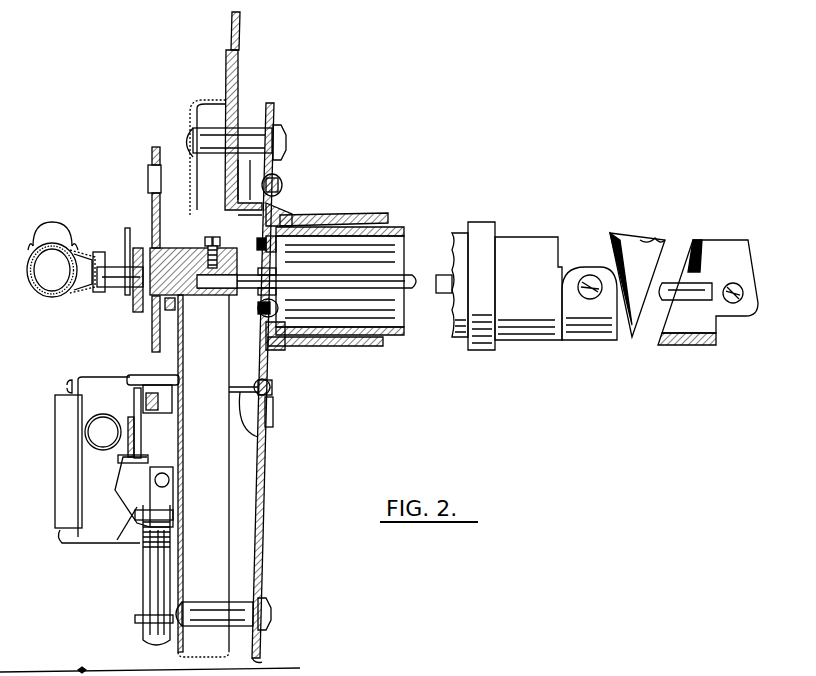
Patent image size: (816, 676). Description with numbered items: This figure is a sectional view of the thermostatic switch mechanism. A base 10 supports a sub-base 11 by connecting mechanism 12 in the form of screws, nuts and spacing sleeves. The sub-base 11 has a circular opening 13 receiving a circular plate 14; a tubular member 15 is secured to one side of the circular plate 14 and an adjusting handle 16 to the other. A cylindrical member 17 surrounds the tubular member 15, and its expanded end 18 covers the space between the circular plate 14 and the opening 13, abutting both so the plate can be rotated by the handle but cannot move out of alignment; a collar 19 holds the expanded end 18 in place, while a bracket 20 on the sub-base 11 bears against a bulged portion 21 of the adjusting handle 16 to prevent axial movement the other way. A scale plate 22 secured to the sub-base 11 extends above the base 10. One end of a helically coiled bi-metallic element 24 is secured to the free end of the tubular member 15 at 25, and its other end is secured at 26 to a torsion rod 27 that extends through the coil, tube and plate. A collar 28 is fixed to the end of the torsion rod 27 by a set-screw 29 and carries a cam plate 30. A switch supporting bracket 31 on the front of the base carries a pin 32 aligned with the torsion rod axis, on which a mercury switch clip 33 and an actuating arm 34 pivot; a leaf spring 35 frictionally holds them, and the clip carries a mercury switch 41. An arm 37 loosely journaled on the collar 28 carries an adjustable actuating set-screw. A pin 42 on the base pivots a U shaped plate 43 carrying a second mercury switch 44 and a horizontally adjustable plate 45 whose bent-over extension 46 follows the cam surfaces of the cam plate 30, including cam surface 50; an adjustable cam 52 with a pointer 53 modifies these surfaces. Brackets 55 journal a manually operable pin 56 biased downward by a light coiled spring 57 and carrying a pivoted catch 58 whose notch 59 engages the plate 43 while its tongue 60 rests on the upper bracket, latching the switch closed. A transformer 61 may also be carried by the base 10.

The base 10 is at (178, 655).
The sub-base 11 is at (262, 565).
The connecting mechanism 12 is at (250, 130).
The circular opening 13 is at (266, 390).
The circular plate 14 is at (276, 216).
The tubular member 15 is at (396, 236).
The adjusting handle 16 is at (241, 20).
The cylindrical member 17 is at (365, 214).
The expanded end 18 is at (284, 348).
The collar 19 is at (281, 182).
The bracket 20 is at (262, 448).
The bulged portion 21 is at (280, 308).
The scale plate 22 is at (226, 80).
The helically coiled bi-metallic element 24 is at (672, 340).
The securing point of bi-metallic element to tubular member 25 is at (590, 278).
The securing point of bi-metallic element to torsion rod 26 is at (737, 302).
The torsion rod 27 is at (410, 278).
The collar 28 is at (217, 298).
The set-screw 29 is at (213, 237).
The cam plate 30 is at (152, 150).
The switch supporting bracket 31 is at (135, 312).
The pin 32 is at (82, 293).
The mercury switch clip 33 is at (92, 260).
The actuating arm 34 is at (126, 235).
The leaf spring 35 is at (128, 296).
The arm 37 is at (175, 316).
The mercury switch 41 is at (55, 232).
The pin 42 is at (138, 452).
The U shaped plate 43 is at (125, 458).
The second mercury switch 44 is at (103, 415).
The horizontally adjustable plate 45 is at (128, 377).
The bent-over extension 46 is at (158, 385).
The cam surface 50 is at (147, 383).
The adjustable cam 52 is at (161, 222).
The pointer 53 is at (148, 192).
The brackets 55 is at (135, 548).
The manually operable pin 56 is at (143, 640).
The light coiled spring 57 is at (140, 556).
The pivoted catch 58 is at (128, 500).
The notch 59 is at (140, 466).
The tongue 60 is at (140, 517).
The transformer 61 is at (60, 440).